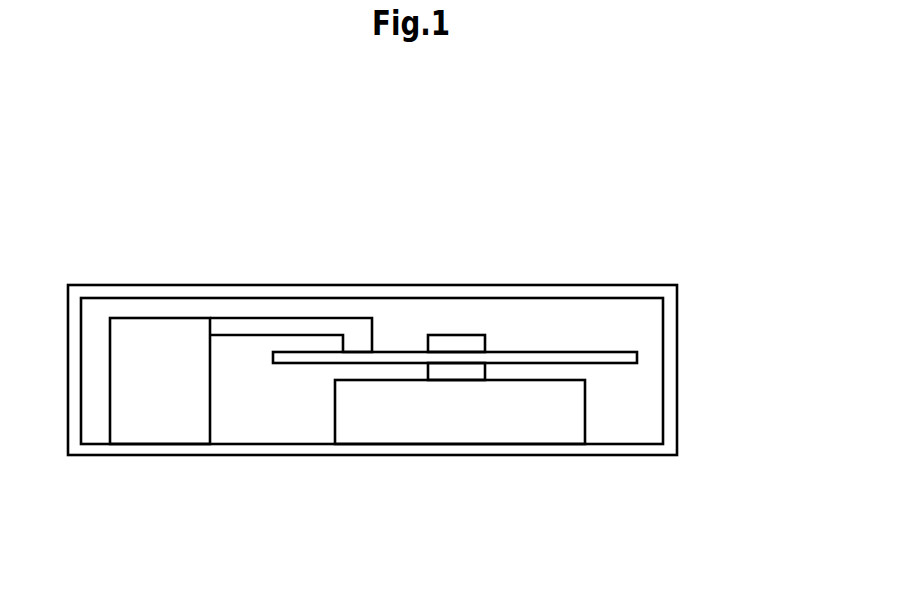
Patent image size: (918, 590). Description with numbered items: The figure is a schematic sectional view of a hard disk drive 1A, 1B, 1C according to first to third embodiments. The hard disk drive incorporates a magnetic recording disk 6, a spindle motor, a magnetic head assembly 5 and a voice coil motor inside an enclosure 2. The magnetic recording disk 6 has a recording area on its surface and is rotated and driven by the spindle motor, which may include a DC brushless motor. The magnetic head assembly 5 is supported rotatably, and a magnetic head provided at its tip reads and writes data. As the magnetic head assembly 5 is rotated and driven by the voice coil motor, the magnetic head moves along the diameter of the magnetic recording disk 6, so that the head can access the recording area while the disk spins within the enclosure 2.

The hard disk drive 1A is at (423, 270).
The hard disk drive 1B is at (423, 270).
The hard disk drive 1C is at (423, 270).
The enclosure 2 is at (603, 292).
The magnetic head assembly 5 is at (294, 294).
The magnetic recording disk 6 is at (572, 354).